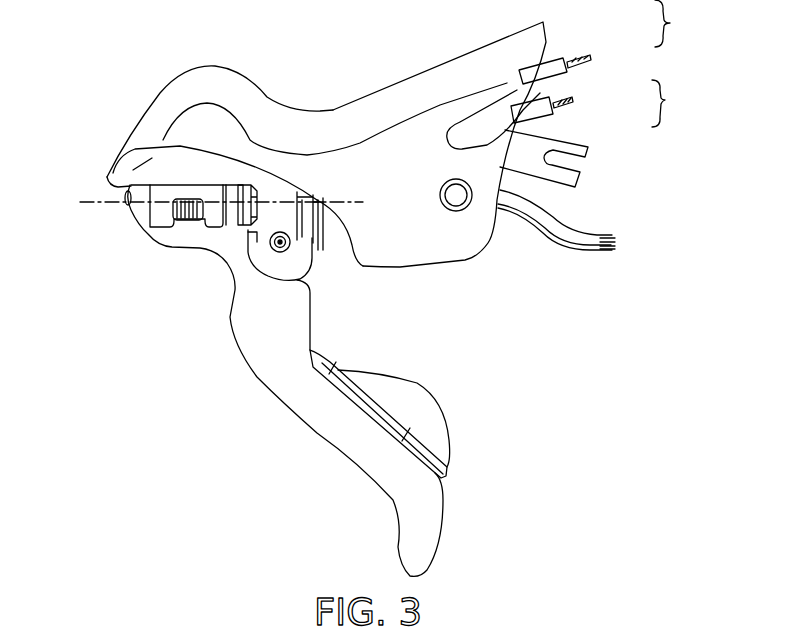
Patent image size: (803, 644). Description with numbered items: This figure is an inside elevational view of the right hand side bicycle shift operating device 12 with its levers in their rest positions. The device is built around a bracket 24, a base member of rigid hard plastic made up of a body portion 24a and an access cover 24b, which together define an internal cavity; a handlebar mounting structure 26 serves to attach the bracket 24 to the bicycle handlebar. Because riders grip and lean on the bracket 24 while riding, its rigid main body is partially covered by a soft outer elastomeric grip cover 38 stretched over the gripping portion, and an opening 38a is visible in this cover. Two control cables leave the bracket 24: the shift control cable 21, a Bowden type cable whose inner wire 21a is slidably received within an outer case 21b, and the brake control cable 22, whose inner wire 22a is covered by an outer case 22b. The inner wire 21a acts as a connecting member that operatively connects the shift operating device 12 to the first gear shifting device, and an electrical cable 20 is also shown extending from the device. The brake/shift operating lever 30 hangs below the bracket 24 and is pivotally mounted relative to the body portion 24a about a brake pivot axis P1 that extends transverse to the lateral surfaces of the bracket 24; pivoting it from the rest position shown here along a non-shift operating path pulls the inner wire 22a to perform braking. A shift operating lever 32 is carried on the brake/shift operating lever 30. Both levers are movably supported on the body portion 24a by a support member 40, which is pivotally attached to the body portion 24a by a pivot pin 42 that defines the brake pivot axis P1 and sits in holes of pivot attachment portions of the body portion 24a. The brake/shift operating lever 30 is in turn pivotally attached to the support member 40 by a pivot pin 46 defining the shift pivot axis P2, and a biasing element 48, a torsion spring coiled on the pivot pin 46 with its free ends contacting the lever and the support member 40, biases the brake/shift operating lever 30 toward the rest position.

The bicycle shift operating device 12 is at (112, 80).
The electrical cable 20 is at (561, 233).
The shift control cable 21 is at (672, 103).
The inner wire 21a is at (561, 104).
The outer case 21b is at (552, 114).
The brake control cable 22 is at (676, 23).
The inner wire 22a is at (575, 52).
The outer case 22b is at (553, 55).
The bracket 24 is at (434, 68).
The body portion 24a is at (200, 170).
The access cover 24b is at (342, 250).
The handlebar mounting structure 26 is at (589, 157).
The brake/shift operating lever 30 is at (331, 442).
The shift operating lever 32 is at (451, 408).
The grip cover 38 is at (295, 133).
The opening in grip cover 38a is at (457, 212).
The support member 40 is at (160, 222).
The pivot pin 42 is at (235, 272).
The pivot pin 46 is at (127, 206).
The biasing element 48 is at (188, 221).
The brake pivot axis P1 is at (278, 250).
The shift pivot axis P2 is at (95, 204).